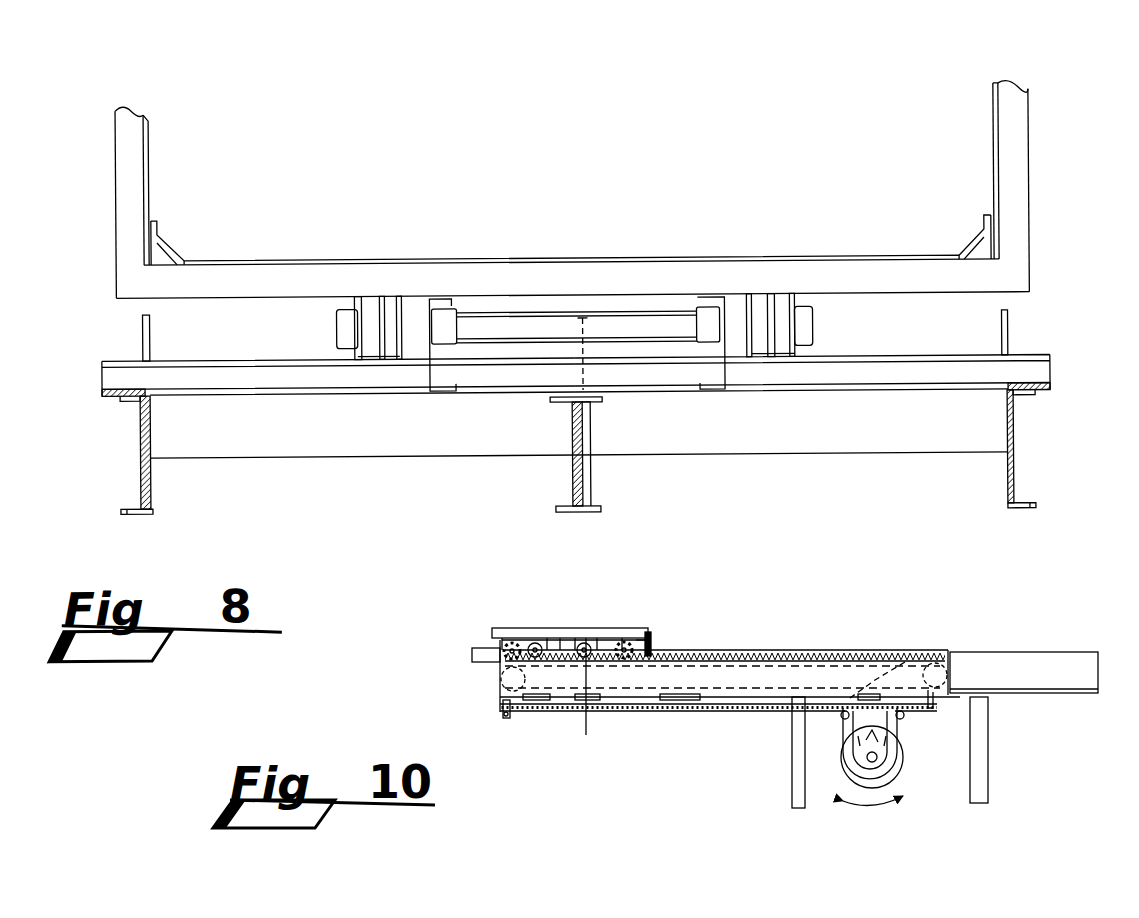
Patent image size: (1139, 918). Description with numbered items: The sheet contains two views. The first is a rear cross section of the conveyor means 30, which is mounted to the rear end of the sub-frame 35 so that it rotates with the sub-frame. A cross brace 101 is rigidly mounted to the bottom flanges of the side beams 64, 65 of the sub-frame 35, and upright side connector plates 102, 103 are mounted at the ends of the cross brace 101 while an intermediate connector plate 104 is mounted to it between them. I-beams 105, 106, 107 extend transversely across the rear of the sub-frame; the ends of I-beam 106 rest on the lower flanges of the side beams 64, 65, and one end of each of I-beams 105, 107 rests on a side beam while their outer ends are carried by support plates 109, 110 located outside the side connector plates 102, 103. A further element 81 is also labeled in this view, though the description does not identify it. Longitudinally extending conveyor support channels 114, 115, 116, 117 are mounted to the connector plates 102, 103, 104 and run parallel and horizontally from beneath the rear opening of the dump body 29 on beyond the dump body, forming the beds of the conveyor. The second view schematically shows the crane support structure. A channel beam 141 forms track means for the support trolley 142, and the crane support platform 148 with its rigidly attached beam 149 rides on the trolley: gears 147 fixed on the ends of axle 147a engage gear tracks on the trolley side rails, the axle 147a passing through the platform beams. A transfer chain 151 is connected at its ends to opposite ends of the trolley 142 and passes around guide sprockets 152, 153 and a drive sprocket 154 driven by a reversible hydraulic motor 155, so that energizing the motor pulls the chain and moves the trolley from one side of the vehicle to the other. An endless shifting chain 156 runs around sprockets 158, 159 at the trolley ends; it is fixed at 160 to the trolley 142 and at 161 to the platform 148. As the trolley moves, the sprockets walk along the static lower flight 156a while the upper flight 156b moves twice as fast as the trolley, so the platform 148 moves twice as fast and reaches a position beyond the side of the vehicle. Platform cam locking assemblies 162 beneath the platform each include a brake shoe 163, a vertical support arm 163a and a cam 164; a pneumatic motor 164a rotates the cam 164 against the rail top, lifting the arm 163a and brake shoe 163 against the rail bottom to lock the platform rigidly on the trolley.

In FIG. 8, the dump body 29 is at (1030, 160).
In FIG. 8, the conveyor means 30 is at (577, 424).
In FIG. 8, the sub-frame 35 is at (575, 328).
In FIG. 8, the side beam 64 is at (450, 390).
In FIG. 8, the side beam 65 is at (723, 390).
In FIG. 8, the hydraulic cylinder 81 is at (680, 322).
In FIG. 8, the cross brace 101 is at (850, 447).
In FIG. 8, the side connector plate 102 is at (1010, 325).
In FIG. 8, the side connector plate 103 is at (143, 330).
In FIG. 8, the intermediate connector plate 104 is at (592, 348).
In FIG. 8, the I-beam 105 is at (872, 374).
In FIG. 8, the I-beam 106 is at (650, 378).
In FIG. 8, the I-beam 107 is at (232, 372).
In FIG. 8, the support plate 109 is at (1040, 397).
In FIG. 8, the support plate 110 is at (103, 398).
In FIG. 8, the conveyor support channel 114 is at (1015, 497).
In FIG. 8, the conveyor support channel 115 is at (600, 507).
In FIG. 8, the conveyor support channel 116 is at (570, 503).
In FIG. 8, the conveyor support channel 117 is at (135, 505).
In FIG. 10, the channel beam 141 is at (1043, 670).
In FIG. 10, the support trolley 142 is at (650, 632).
In FIG. 10, the gear 147 is at (641, 640).
In FIG. 10, the axle 147a is at (622, 640).
In FIG. 10, the crane support platform 148 is at (560, 642).
In FIG. 10, the beam 149 is at (545, 643).
In FIG. 10, the transfer chain 151 is at (643, 712).
In FIG. 10, the guide sprocket 152 is at (838, 714).
In FIG. 10, the guide sprocket 153 is at (902, 719).
In FIG. 10, the drive sprocket 154 is at (864, 755).
In FIG. 10, the reversible hydraulic motor 155 is at (895, 775).
In FIG. 10, the shifting chain 156 is at (757, 656).
In FIG. 10, the lower flight 156a is at (720, 700).
In FIG. 10, the upper flight 156b is at (850, 652).
In FIG. 10, the sprocket 158 is at (950, 650).
In FIG. 10, the sprocket 159 is at (497, 690).
In FIG. 10, the fixing point to trolley 160 is at (905, 660).
In FIG. 10, the fixing point to platform 161 is at (548, 720).
In FIG. 10, the platform cam locking assembly 162 is at (529, 626).
In FIG. 10, the brake shoe 163 is at (505, 716).
In FIG. 10, the vertical support arm 163a is at (586, 636).
In FIG. 10, the cam 164 is at (520, 638).
In FIG. 10, the pneumatic motor 164a is at (500, 668).